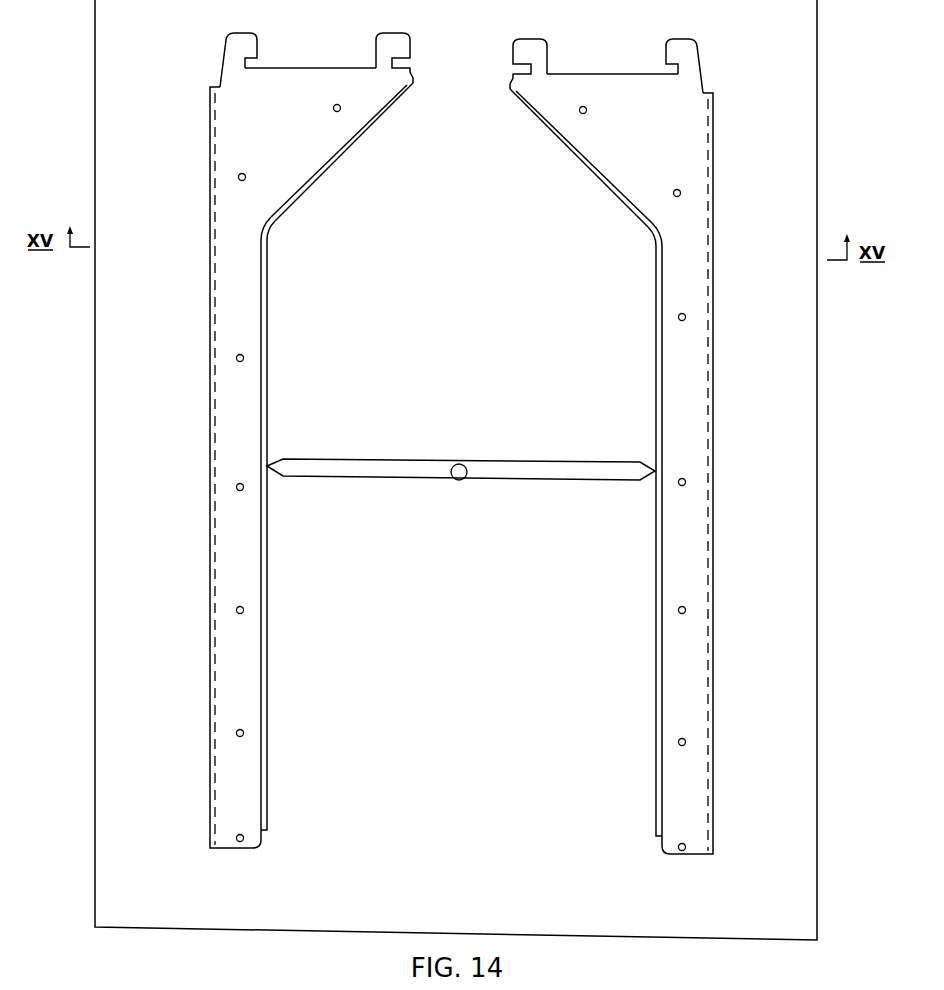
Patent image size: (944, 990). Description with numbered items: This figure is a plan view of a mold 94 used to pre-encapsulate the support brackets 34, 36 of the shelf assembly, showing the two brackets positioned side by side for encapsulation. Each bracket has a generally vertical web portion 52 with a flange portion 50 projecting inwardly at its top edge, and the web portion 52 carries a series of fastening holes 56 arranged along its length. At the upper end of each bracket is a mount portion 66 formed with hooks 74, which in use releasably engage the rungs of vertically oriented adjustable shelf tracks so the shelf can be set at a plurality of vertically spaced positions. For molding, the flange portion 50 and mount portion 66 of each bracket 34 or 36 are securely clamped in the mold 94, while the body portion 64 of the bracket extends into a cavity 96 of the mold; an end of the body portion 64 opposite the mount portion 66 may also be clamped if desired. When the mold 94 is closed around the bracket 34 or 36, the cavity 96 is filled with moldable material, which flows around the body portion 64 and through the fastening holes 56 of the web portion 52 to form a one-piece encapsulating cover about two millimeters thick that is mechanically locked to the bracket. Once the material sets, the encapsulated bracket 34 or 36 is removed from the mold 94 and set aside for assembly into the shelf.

The support bracket 34 is at (655, 284).
The support bracket 36 is at (272, 243).
The flange portion 50 is at (212, 262).
The web portion 52 is at (335, 153).
The fastening holes 56 is at (333, 108).
The body portion 64 is at (252, 400).
The mount portion 66 is at (315, 78).
The hooks 74 is at (253, 45).
The mold 94 is at (462, 729).
The cavity 96 is at (268, 702).